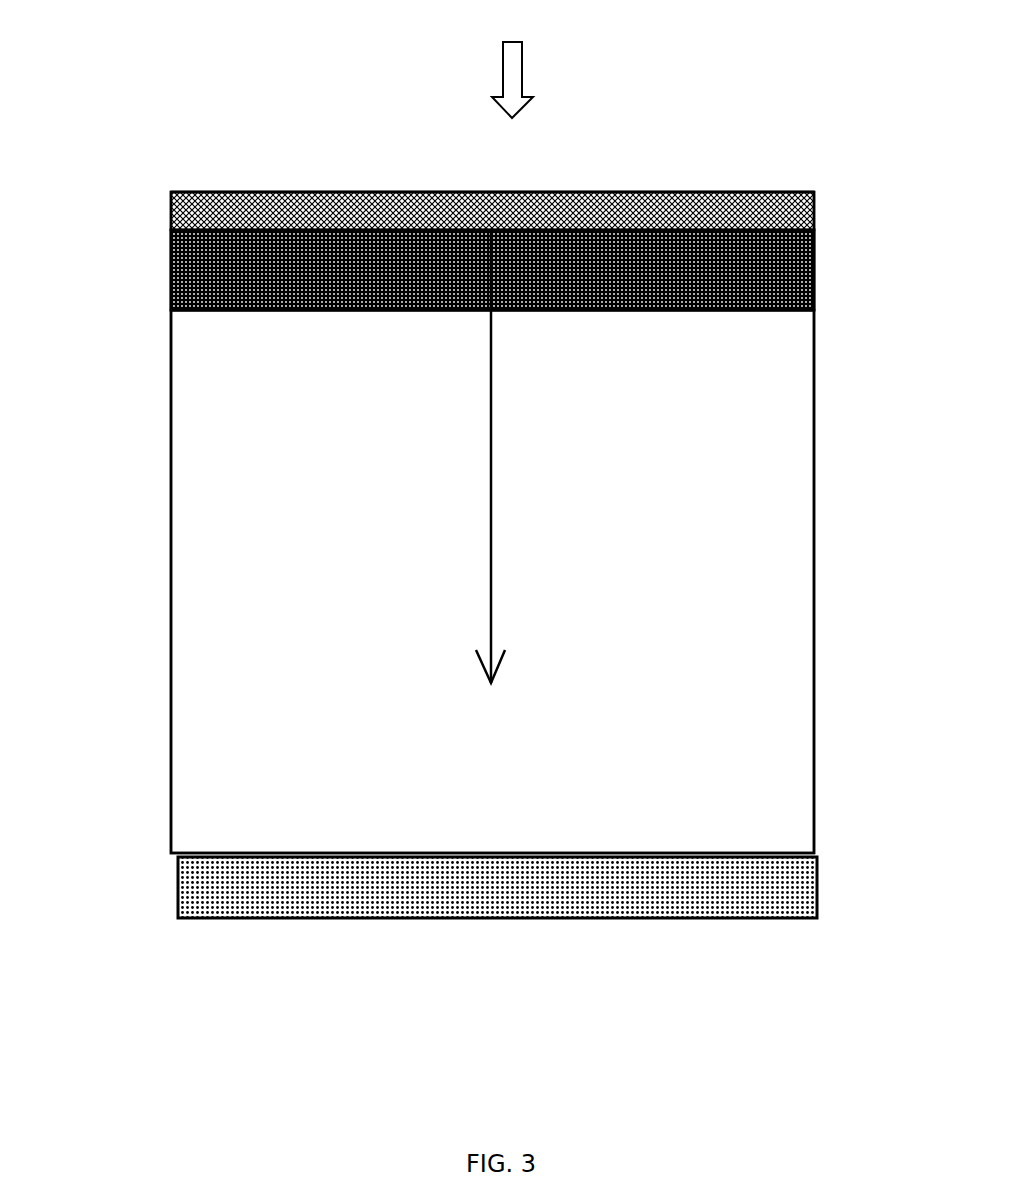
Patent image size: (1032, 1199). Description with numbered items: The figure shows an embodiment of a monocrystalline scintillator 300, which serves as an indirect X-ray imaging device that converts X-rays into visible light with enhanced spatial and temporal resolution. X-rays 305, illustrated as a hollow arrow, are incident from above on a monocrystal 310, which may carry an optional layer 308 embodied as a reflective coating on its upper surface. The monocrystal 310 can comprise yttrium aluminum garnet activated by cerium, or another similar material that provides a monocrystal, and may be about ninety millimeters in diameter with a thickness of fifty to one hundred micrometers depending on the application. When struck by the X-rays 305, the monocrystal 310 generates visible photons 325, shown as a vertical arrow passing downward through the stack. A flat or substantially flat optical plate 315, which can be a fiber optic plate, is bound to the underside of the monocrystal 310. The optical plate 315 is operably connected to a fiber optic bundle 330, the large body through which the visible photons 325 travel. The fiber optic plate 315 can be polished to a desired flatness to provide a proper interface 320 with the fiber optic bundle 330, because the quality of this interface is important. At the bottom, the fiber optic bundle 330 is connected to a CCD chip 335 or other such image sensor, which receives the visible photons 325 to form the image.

The monocrystalline scintillator 300 is at (818, 74).
The X-rays 305 is at (540, 73).
The optional layer 308 is at (158, 183).
The monocrystal 310 is at (833, 203).
The optical plate 315 is at (833, 263).
The interface 320 is at (145, 298).
The photons 325 is at (478, 507).
The fiber optic bundle 330 is at (155, 503).
The CCD chip 335 is at (163, 880).